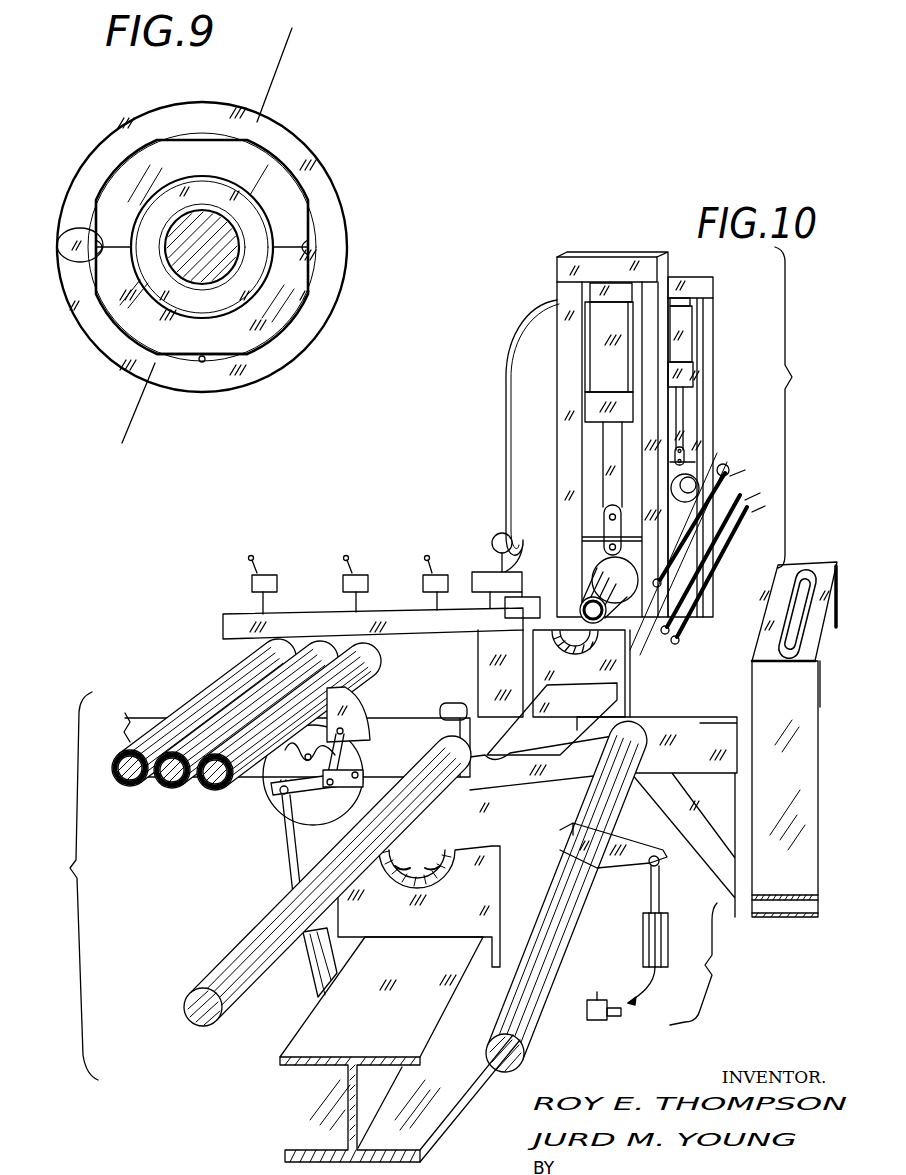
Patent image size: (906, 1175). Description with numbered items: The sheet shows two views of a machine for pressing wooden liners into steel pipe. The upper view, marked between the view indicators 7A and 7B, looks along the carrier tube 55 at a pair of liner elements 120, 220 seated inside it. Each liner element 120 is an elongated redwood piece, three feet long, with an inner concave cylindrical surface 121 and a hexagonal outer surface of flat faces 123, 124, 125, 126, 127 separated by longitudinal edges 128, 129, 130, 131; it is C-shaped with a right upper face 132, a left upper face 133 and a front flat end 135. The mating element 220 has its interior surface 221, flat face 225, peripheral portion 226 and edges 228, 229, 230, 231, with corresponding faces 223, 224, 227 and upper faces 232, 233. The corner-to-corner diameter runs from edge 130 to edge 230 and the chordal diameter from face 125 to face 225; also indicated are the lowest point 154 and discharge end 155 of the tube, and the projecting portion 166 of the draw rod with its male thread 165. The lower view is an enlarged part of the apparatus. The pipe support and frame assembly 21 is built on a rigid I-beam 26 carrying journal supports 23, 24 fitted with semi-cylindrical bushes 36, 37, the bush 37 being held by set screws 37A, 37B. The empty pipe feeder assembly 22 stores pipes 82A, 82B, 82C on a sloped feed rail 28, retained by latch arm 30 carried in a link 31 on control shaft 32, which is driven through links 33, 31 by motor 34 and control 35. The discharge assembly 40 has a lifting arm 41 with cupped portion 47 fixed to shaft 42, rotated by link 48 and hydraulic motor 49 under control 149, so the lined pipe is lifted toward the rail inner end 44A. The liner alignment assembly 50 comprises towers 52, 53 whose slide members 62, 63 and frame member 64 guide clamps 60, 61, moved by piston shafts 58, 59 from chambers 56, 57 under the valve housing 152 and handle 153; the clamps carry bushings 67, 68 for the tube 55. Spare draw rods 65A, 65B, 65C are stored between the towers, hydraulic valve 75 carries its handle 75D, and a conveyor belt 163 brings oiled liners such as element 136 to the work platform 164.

In FIG. 9, the section line indicator 7A is at (128, 443).
In FIG. 9, the section line indicator 7B is at (278, 63).
In FIG. 10, the pipe support and frame assembly 21 is at (295, 1118).
In FIG. 10, the empty pipe feeder assembly 22 is at (69, 886).
In FIG. 10, the journal support 23 is at (610, 677).
In FIG. 10, the journal support 24 is at (419, 906).
In FIG. 10, the I-beam 26 is at (417, 1033).
In FIG. 10, the pipe feed rail 28 is at (397, 732).
In FIG. 10, the latch arm 30 is at (342, 730).
In FIG. 10, the link 31 is at (297, 792).
In FIG. 10, the pipe feeder control shaft 32 is at (303, 890).
In FIG. 10, the link 33 is at (290, 842).
In FIG. 10, the motor 34 is at (313, 977).
In FIG. 10, the control 35 is at (343, 575).
In FIG. 10, the semi-cylindrical bush 36 is at (575, 654).
In FIG. 10, the semi-cylindrical bush 37 is at (413, 887).
In FIG. 10, the set screw 37A is at (402, 865).
In FIG. 10, the set screw 37B is at (432, 867).
In FIG. 10, the loaded pipe discharge assembly 40 is at (717, 965).
In FIG. 10, the first lifting arm 41 is at (577, 767).
In FIG. 10, the pipe discharge arm control shaft 42 is at (565, 1005).
In FIG. 10, the feed end of rail 44A is at (690, 738).
In FIG. 10, the cupped portion 47 is at (513, 750).
In FIG. 10, the link 48 is at (633, 853).
In FIG. 10, the hydraulic motor 49 is at (665, 913).
In FIG. 10, the liner alignment assembly 50 is at (803, 407).
In FIG. 10, the vertical tower 52 is at (555, 265).
In FIG. 10, the vertical tower 53 is at (713, 307).
In FIG. 9, the carrier tube 55 is at (348, 238).
In FIG. 10, the carrier tube 55 is at (676, 486).
In FIG. 10, the hydraulic piston chamber 56 is at (598, 368).
In FIG. 10, the hydraulic piston chamber 57 is at (687, 332).
In FIG. 10, the piston shaft 58 is at (613, 453).
In FIG. 10, the piston shaft 59 is at (680, 415).
In FIG. 10, the front carrier tube clamp 60 is at (592, 558).
In FIG. 10, the rear tubing clamp 61 is at (695, 482).
In FIG. 10, the front right vertical slide frame member 62 is at (653, 302).
In FIG. 10, the front left slide member 63 is at (556, 310).
In FIG. 10, the frame post 64 is at (712, 357).
In FIG. 10, the spare draw rod 65A is at (738, 495).
In FIG. 10, the spare draw rod 65B is at (737, 518).
In FIG. 10, the spare draw rod 65C is at (727, 543).
In FIG. 10, the bushing 67 is at (586, 574).
In FIG. 10, the bushing 68 is at (729, 470).
In FIG. 10, the hydraulic control valve 75 is at (252, 588).
In FIG. 10, the valve handle 75D is at (252, 565).
In FIG. 10, the empty pipe 82A is at (215, 790).
In FIG. 10, the empty pipe 82B is at (170, 789).
In FIG. 10, the empty pipe 82C is at (123, 786).
In FIG. 9, the liner element 120 is at (158, 333).
In FIG. 10, the liner element 120 is at (813, 608).
In FIG. 9, the inner concave cylindrical surface 121 is at (155, 303).
In FIG. 9, the flat face portion 123 is at (310, 270).
In FIG. 9, the flat face portion 124 is at (303, 315).
In FIG. 10, the flat face portion 124 is at (792, 596).
In FIG. 9, the flat face portion 125 is at (206, 361).
In FIG. 10, the flat face portion 125 is at (783, 568).
In FIG. 9, the flat face portion 126 is at (128, 338).
In FIG. 10, the flat face portion 126 is at (838, 572).
In FIG. 9, the flat face portion 127 is at (95, 275).
In FIG. 9, the edge 128 is at (308, 293).
In FIG. 9, the edge 129 is at (255, 372).
In FIG. 10, the edge 129 is at (785, 622).
In FIG. 9, the edge 130 is at (152, 362).
In FIG. 10, the edge 130 is at (802, 593).
In FIG. 9, the edge 131 is at (95, 292).
In FIG. 9, the right upper face 132 is at (318, 258).
In FIG. 9, the left upper face 133 is at (87, 258).
In FIG. 9, the front flat end 135 is at (202, 342).
In FIG. 10, the front flat end 135 is at (767, 666).
In FIG. 10, the liner element 136 is at (805, 575).
In FIG. 10, the control 149 is at (433, 573).
In FIG. 10, the hydraulic alignment control valve housing assembly 152 is at (484, 572).
In FIG. 10, the valve control handle 153 is at (498, 533).
In FIG. 9, the lowest point of interior surface 154 is at (207, 397).
In FIG. 9, the discharge end 155 is at (252, 378).
In FIG. 10, the conveyor belt 163 is at (786, 789).
In FIG. 10, the work platform 164 is at (815, 657).
In FIG. 9, the male thread 165 is at (202, 247).
In FIG. 9, the projecting portion 166 is at (231, 180).
In FIG. 9, the liner element 220 is at (202, 247).
In FIG. 9, the interior surface 221 is at (155, 186).
In FIG. 9, the die segment 223 is at (93, 223).
In FIG. 9, the die segment 224 is at (127, 175).
In FIG. 9, the flat face 225 is at (208, 140).
In FIG. 9, the flat peripheral portion 226 is at (247, 198).
In FIG. 9, the die segment 227 is at (310, 214).
In FIG. 9, the edge 228 is at (97, 202).
In FIG. 9, the edge 229 is at (157, 140).
In FIG. 9, the edge 230 is at (243, 140).
In FIG. 9, the edge 231 is at (308, 208).
In FIG. 9, the key 232 is at (87, 232).
In FIG. 9, the die segment 233 is at (312, 212).